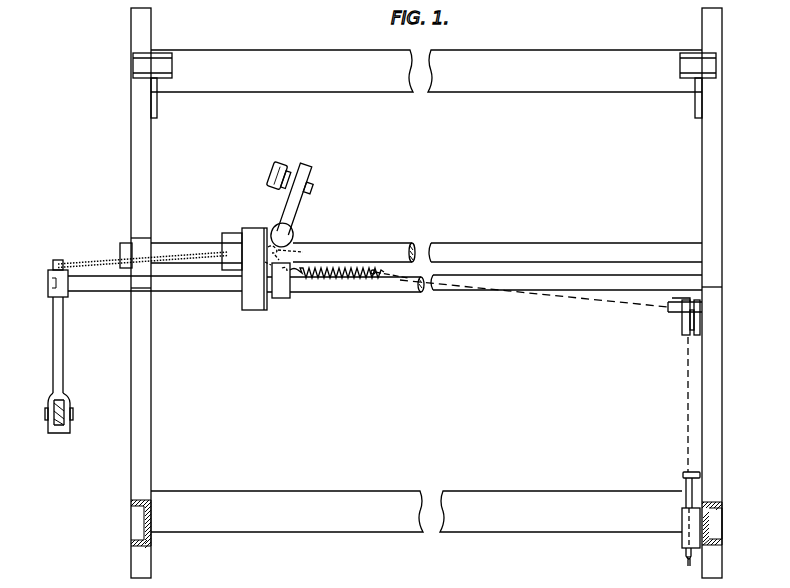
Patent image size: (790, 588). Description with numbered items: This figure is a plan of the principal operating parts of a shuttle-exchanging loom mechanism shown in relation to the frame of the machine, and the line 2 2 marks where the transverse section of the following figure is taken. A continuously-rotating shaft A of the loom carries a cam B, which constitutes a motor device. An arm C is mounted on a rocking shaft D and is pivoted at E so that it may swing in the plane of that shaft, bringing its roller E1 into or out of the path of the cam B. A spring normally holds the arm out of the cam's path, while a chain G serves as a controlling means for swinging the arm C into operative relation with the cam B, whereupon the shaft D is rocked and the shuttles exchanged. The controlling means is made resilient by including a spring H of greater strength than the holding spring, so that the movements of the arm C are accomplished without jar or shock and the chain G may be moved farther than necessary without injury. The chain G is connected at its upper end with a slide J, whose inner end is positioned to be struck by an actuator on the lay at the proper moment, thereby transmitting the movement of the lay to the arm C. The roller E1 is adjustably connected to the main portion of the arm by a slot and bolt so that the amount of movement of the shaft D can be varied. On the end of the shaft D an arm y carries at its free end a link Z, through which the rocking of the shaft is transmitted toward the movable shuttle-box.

The continuously-rotating shaft A is at (387, 247).
The cam B is at (252, 303).
The arm C is at (297, 223).
The rocking shaft D is at (335, 285).
The pivot E is at (105, 262).
The roller E1 is at (280, 165).
The chain G is at (553, 300).
The spring H is at (357, 278).
The slide J is at (683, 478).
The arm y is at (53, 353).
The link Z is at (60, 433).
The section line 2 2 is at (185, 78).